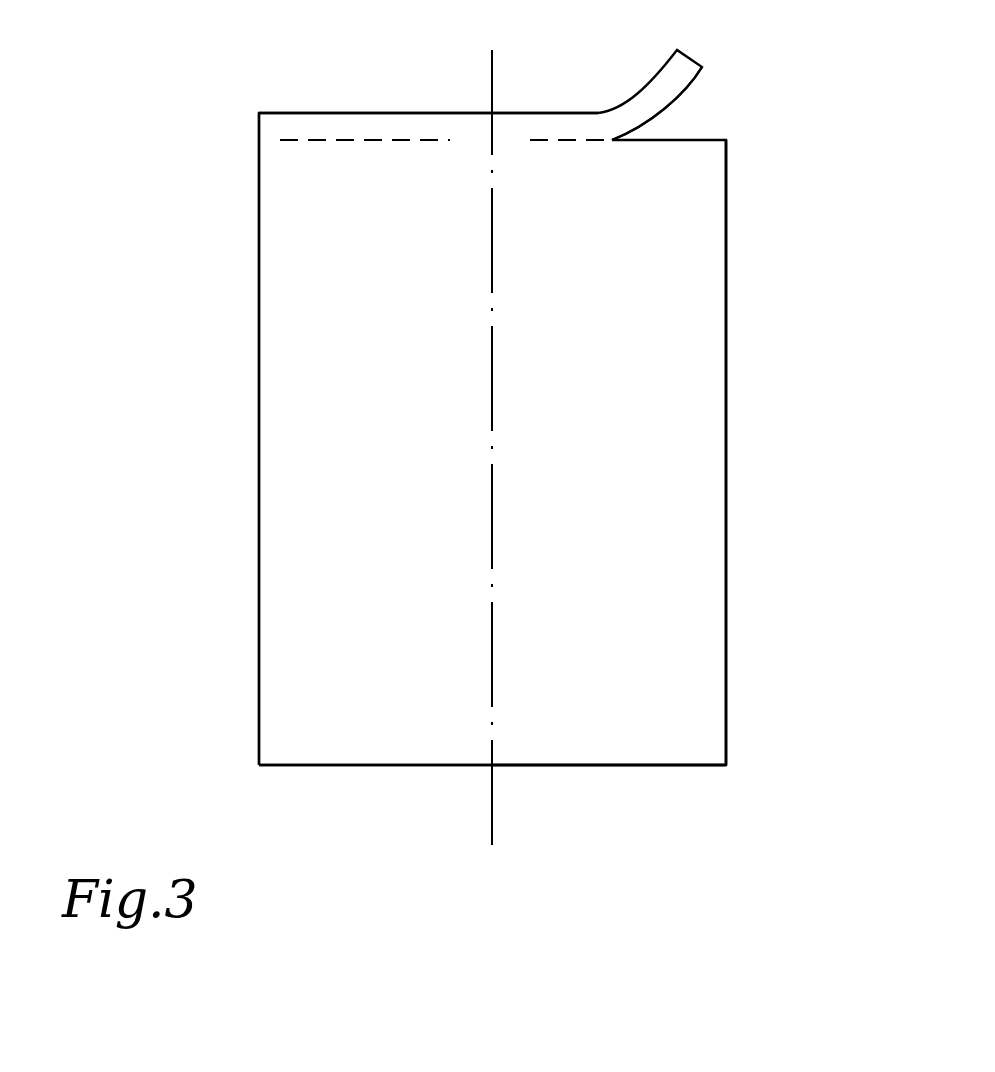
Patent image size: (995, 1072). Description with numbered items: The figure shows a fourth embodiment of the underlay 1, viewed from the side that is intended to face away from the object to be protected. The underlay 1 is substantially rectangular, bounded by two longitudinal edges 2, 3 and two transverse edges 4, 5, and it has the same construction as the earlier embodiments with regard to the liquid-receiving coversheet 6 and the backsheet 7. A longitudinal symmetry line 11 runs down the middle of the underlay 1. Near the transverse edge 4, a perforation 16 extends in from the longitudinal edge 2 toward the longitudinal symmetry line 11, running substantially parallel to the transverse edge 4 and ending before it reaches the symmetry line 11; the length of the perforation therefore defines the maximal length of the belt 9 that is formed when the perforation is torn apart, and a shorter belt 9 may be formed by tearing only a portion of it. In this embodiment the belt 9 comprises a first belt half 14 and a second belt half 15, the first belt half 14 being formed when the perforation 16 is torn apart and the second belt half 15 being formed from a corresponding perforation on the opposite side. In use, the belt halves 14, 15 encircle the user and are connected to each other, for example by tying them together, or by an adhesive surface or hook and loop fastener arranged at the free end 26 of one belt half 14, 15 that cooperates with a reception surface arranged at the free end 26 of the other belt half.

The underlay 1 is at (163, 133).
The longitudinal edge 2 is at (726, 262).
The longitudinal edge 3 is at (259, 348).
The transverse edge 4 is at (457, 112).
The transverse edge 5 is at (390, 768).
The liquid-receiving coversheet 6 is at (651, 410).
The backsheet 7 is at (662, 643).
The belt 9 is at (341, 135).
The longitudinal symmetry line 11 is at (495, 807).
The first belt half 14 is at (673, 110).
The second belt half 15 is at (282, 131).
The perforation 16 is at (543, 138).
The free end 26 is at (693, 57).